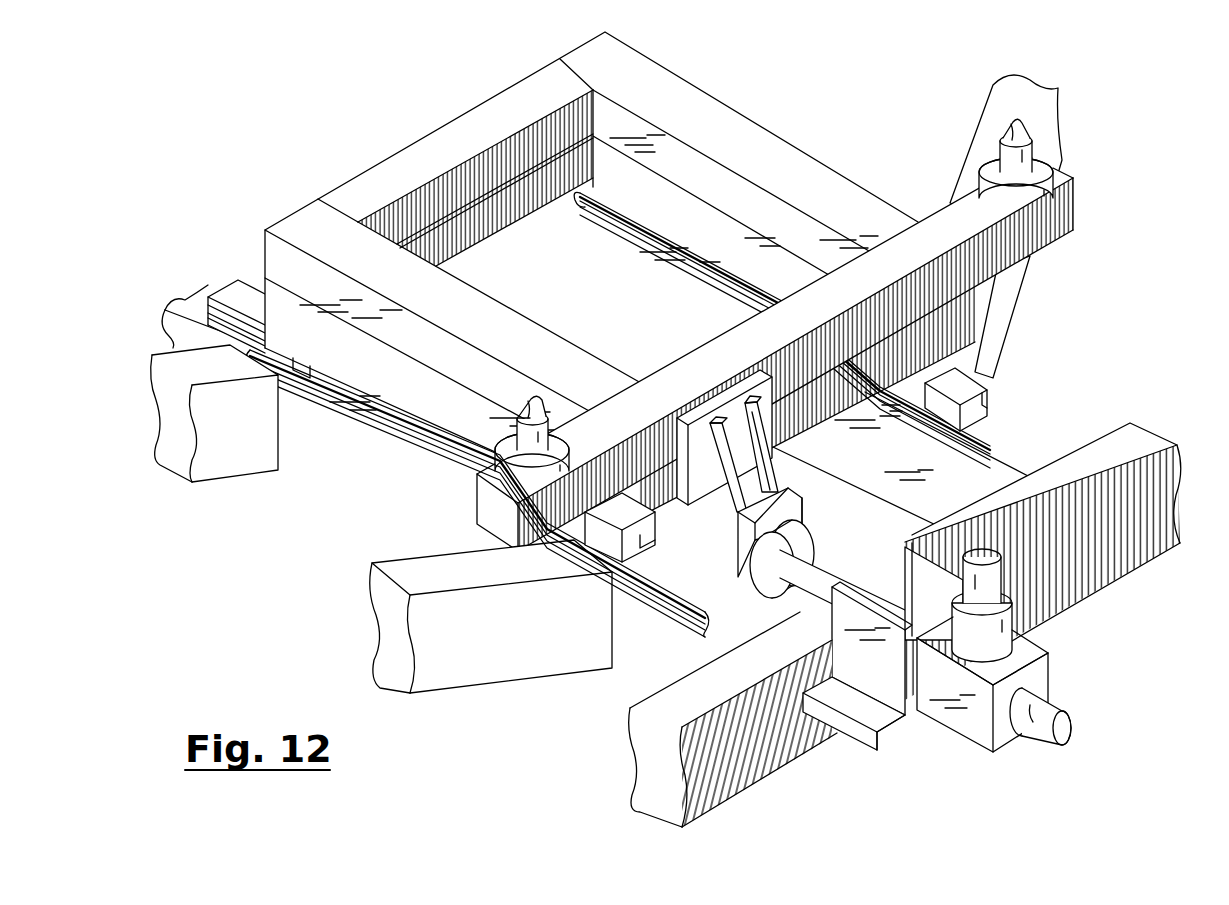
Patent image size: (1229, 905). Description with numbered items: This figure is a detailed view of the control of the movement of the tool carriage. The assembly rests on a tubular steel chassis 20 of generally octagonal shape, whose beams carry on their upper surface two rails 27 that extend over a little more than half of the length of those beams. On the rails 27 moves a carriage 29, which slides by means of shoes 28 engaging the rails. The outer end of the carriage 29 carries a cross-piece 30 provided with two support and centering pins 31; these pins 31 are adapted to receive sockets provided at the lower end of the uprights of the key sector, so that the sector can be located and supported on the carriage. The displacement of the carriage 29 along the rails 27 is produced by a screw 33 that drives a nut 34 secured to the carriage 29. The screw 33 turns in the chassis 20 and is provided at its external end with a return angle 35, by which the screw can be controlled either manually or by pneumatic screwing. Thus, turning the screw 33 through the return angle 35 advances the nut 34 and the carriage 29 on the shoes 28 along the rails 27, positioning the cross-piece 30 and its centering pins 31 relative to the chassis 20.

The tubular steel chassis 20 is at (1125, 540).
The rails 27 is at (980, 418).
The shoes 28 is at (985, 375).
The carriage 29 is at (786, 128).
The cross-piece 30 is at (897, 265).
The support and centering pins 31 is at (1018, 135).
The screw 33 is at (822, 580).
The nut 34 is at (803, 515).
The return angle 35 is at (952, 742).